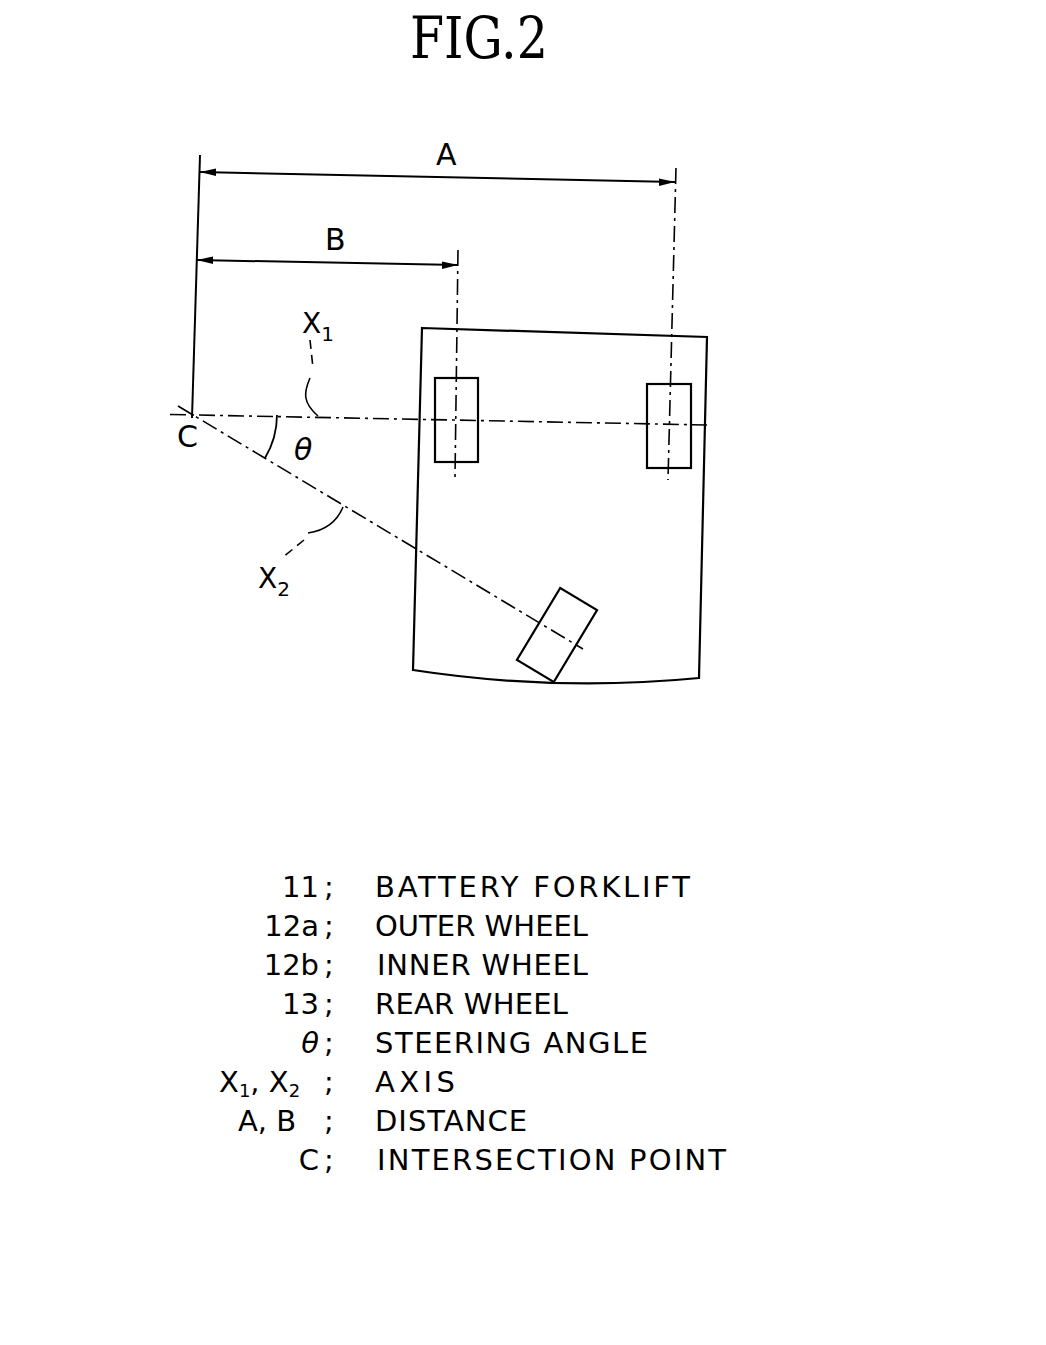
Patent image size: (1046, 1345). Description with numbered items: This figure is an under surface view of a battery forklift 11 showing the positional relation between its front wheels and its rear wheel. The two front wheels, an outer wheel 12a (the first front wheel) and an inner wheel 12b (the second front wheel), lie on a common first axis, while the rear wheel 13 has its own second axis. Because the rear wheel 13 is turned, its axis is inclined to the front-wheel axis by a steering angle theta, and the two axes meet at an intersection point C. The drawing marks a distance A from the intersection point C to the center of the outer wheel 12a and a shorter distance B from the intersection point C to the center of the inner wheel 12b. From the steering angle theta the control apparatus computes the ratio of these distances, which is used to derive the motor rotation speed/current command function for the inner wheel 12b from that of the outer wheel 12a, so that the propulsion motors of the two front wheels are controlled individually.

The battery forklift 11 is at (756, 280).
The outer wheel 12a is at (690, 453).
The inner wheel 12b is at (478, 450).
The rear wheel 13 is at (597, 613).